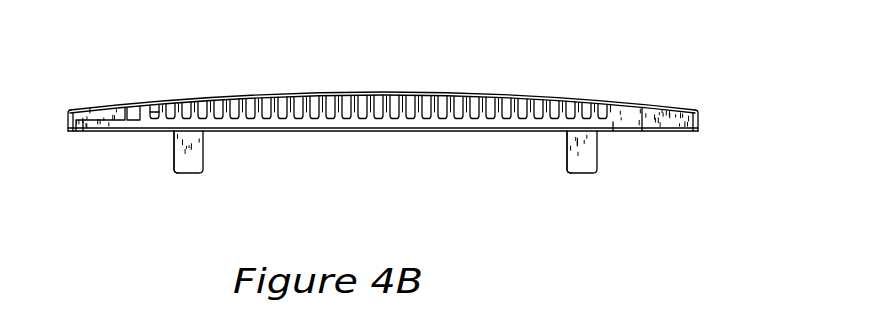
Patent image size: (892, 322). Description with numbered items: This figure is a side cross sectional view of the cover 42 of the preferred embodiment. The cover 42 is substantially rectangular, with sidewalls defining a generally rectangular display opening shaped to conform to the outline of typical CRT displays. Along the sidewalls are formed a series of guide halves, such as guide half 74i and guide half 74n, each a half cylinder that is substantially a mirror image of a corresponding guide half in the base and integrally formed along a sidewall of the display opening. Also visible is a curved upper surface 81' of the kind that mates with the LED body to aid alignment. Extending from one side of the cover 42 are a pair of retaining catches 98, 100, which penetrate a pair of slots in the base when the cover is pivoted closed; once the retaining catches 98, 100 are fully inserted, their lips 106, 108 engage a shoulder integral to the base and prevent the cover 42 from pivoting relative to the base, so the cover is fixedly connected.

The cover 42 is at (699, 118).
The guide half 74i is at (281, 122).
The guide half 74n is at (613, 122).
The upper surface 81' is at (188, 67).
The retaining catch 98 is at (204, 152).
The retaining catch 100 is at (597, 157).
The lip 106 is at (174, 153).
The lip 108 is at (568, 157).